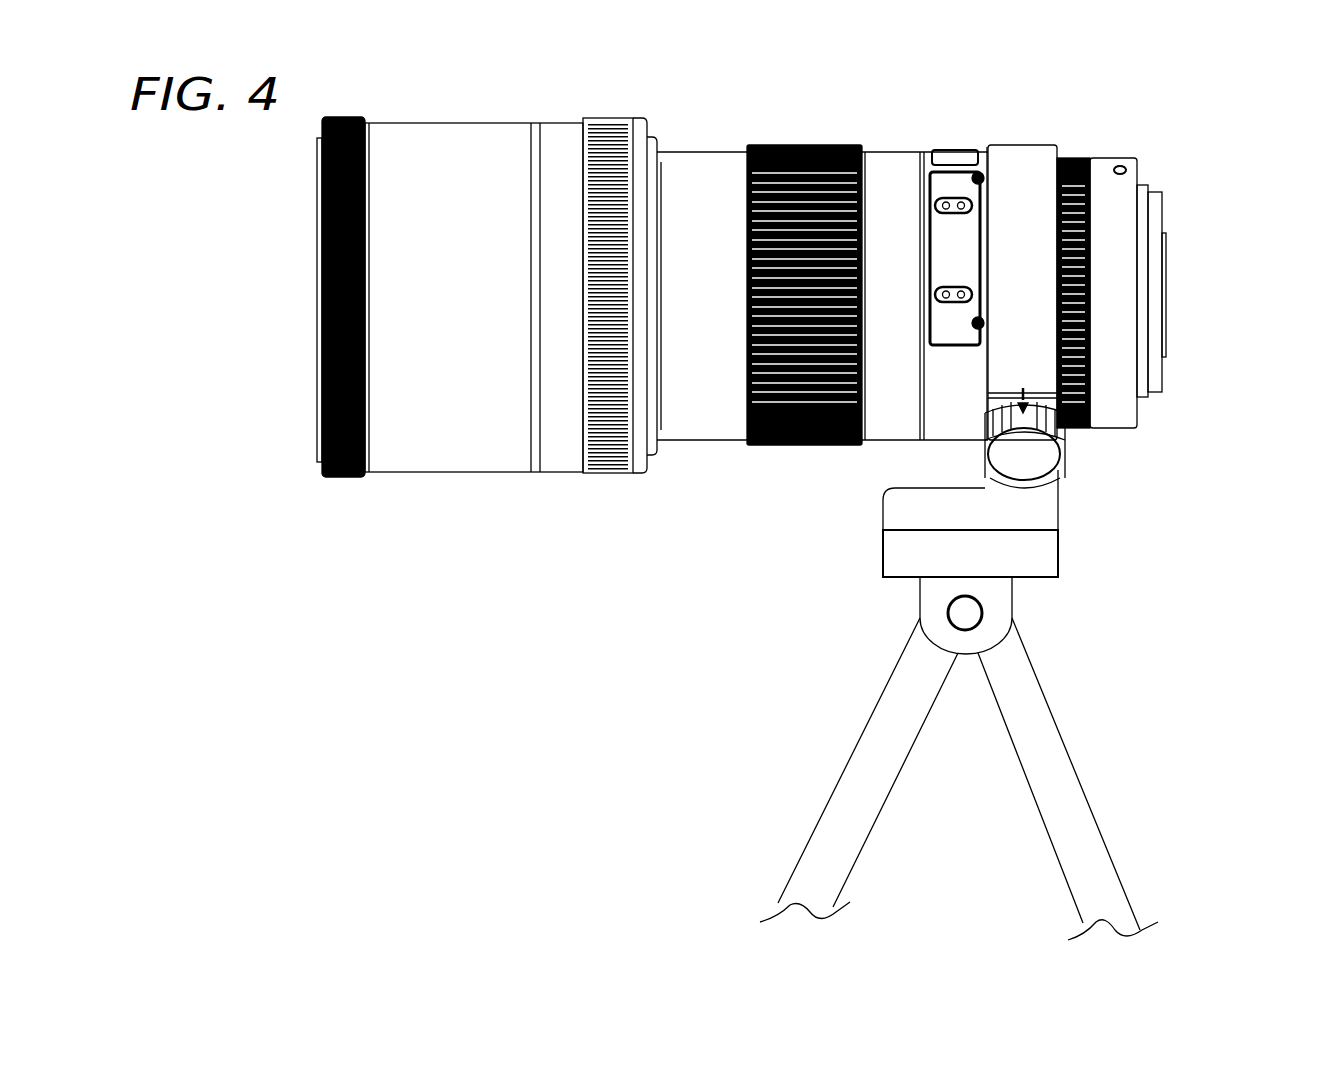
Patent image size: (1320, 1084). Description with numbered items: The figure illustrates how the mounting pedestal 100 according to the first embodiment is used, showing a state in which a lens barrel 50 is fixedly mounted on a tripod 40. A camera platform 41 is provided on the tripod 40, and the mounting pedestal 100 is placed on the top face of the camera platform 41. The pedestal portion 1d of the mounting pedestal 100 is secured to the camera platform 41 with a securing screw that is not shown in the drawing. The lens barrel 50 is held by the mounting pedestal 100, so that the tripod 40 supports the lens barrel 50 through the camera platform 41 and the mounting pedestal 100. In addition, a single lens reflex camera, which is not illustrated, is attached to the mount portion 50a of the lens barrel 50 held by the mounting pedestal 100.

The lens barrel 50 is at (707, 420).
The mount portion 50a is at (1166, 222).
The pedestal portion 1d is at (925, 507).
The mounting pedestal 100 is at (1072, 482).
The camera platform 41 is at (1048, 558).
The tripod 40 is at (858, 698).